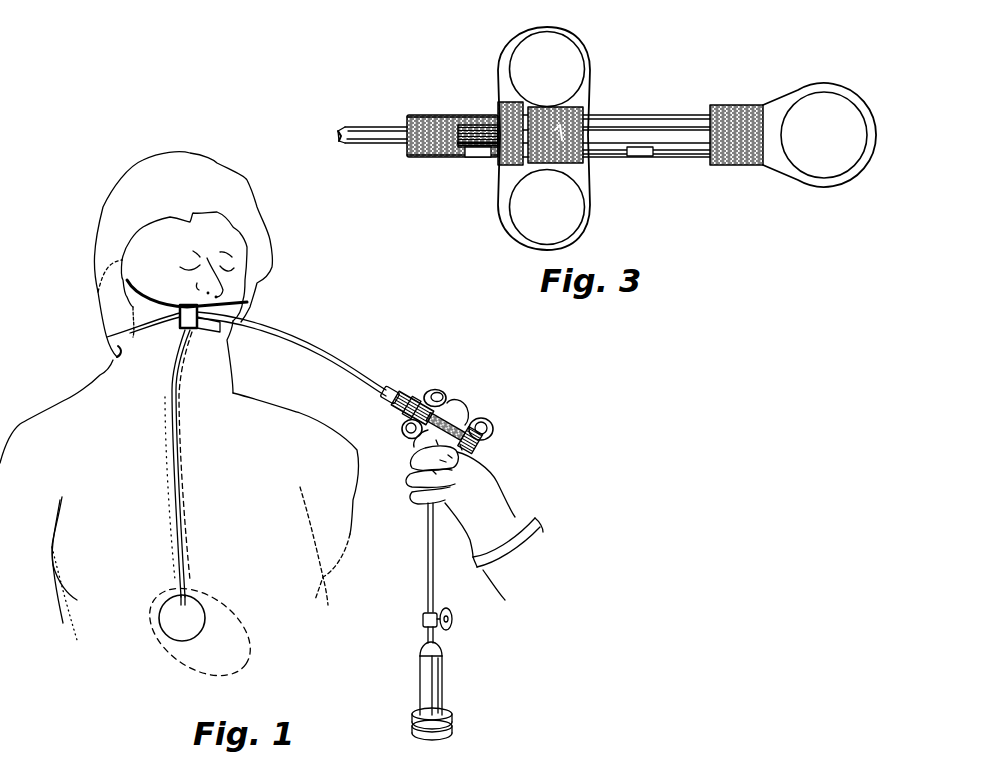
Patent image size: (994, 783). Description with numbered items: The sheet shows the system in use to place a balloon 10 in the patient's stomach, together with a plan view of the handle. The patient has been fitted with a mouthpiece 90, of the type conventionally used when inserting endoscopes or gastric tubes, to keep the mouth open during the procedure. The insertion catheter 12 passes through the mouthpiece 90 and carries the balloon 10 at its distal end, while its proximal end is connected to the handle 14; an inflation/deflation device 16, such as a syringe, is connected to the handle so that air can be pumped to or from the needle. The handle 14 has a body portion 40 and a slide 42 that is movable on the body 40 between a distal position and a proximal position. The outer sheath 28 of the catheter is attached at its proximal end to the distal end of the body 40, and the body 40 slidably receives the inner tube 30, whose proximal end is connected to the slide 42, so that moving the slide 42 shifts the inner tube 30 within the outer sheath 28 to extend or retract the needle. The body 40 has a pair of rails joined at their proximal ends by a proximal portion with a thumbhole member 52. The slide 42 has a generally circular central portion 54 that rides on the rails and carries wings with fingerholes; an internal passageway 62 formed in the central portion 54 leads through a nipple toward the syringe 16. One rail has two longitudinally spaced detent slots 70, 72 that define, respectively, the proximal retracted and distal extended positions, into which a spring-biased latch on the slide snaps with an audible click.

In FIG. 1, the balloon 10 is at (194, 612).
In FIG. 1, the insertion catheter 12 is at (312, 334).
In FIG. 3, the insertion catheter 12 is at (368, 148).
In FIG. 1, the handle 14 is at (469, 390).
In FIG. 3, the handle 14 is at (651, 208).
In FIG. 1, the inflation/deflation device 16 is at (450, 667).
In FIG. 3, the outer sheath 28 is at (362, 125).
In FIG. 3, the inner tube 30 is at (341, 129).
In FIG. 3, the body portion 40 is at (643, 113).
In FIG. 3, the slide 42 is at (594, 43).
In FIG. 3, the thumbhole member 52 is at (811, 85).
In FIG. 3, the central portion 54 is at (574, 112).
In FIG. 3, the internal passageway 62 is at (570, 168).
In FIG. 3, the proximal detent slot 70 is at (632, 155).
In FIG. 3, the distal detent slot 72 is at (471, 150).
In FIG. 1, the mouthpiece 90 is at (112, 339).